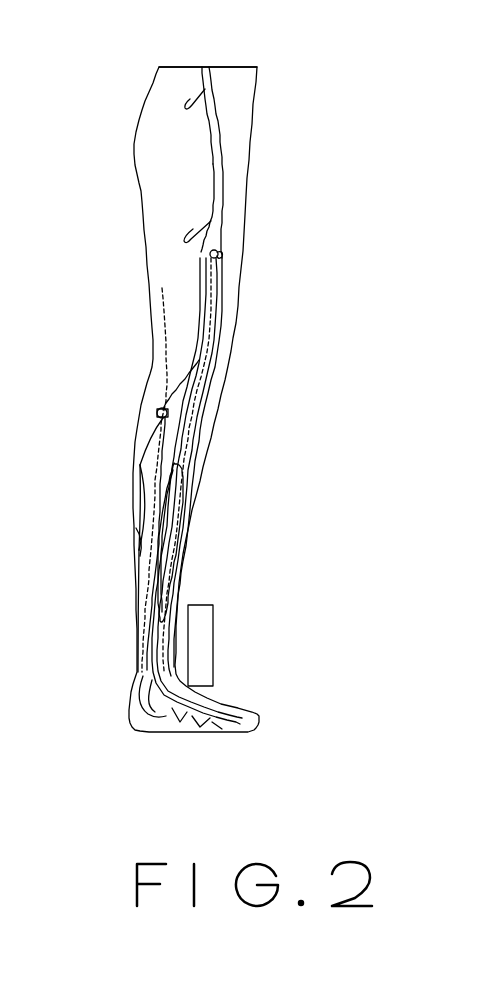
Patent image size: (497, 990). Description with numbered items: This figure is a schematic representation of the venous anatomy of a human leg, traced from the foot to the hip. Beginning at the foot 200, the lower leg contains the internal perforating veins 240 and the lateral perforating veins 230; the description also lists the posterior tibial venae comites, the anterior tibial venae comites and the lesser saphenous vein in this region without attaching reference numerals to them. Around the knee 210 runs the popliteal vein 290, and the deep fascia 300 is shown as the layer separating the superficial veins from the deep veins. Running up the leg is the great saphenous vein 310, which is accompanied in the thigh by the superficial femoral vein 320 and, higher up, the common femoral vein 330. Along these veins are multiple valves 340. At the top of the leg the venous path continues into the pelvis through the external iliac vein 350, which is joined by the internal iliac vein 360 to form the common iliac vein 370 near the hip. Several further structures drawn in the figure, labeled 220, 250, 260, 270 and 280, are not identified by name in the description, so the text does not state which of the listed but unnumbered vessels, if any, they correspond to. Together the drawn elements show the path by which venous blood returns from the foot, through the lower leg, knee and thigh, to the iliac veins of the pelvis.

The foot 200 is at (224, 733).
The knee 210 is at (213, 383).
The leg 220 is at (237, 107).
The lateral perforating veins 230 is at (145, 618).
The internal perforating veins 240 is at (213, 643).
The inner vessel 250 is at (175, 553).
The calf vessel 260 is at (150, 570).
The vessel loop 270 is at (187, 510).
The lower leg nerve 280 is at (123, 465).
The popliteal vein 290 is at (172, 390).
The deep fascia 300 is at (160, 323).
The great saphenous vein 310 is at (217, 320).
The superficial femoral vein 320 is at (200, 283).
The common femoral vein 330 is at (210, 223).
The multiple valves 340 is at (208, 193).
The external iliac vein 350 is at (223, 152).
The internal iliac vein 360 is at (190, 102).
The common iliac vein 370 is at (210, 83).